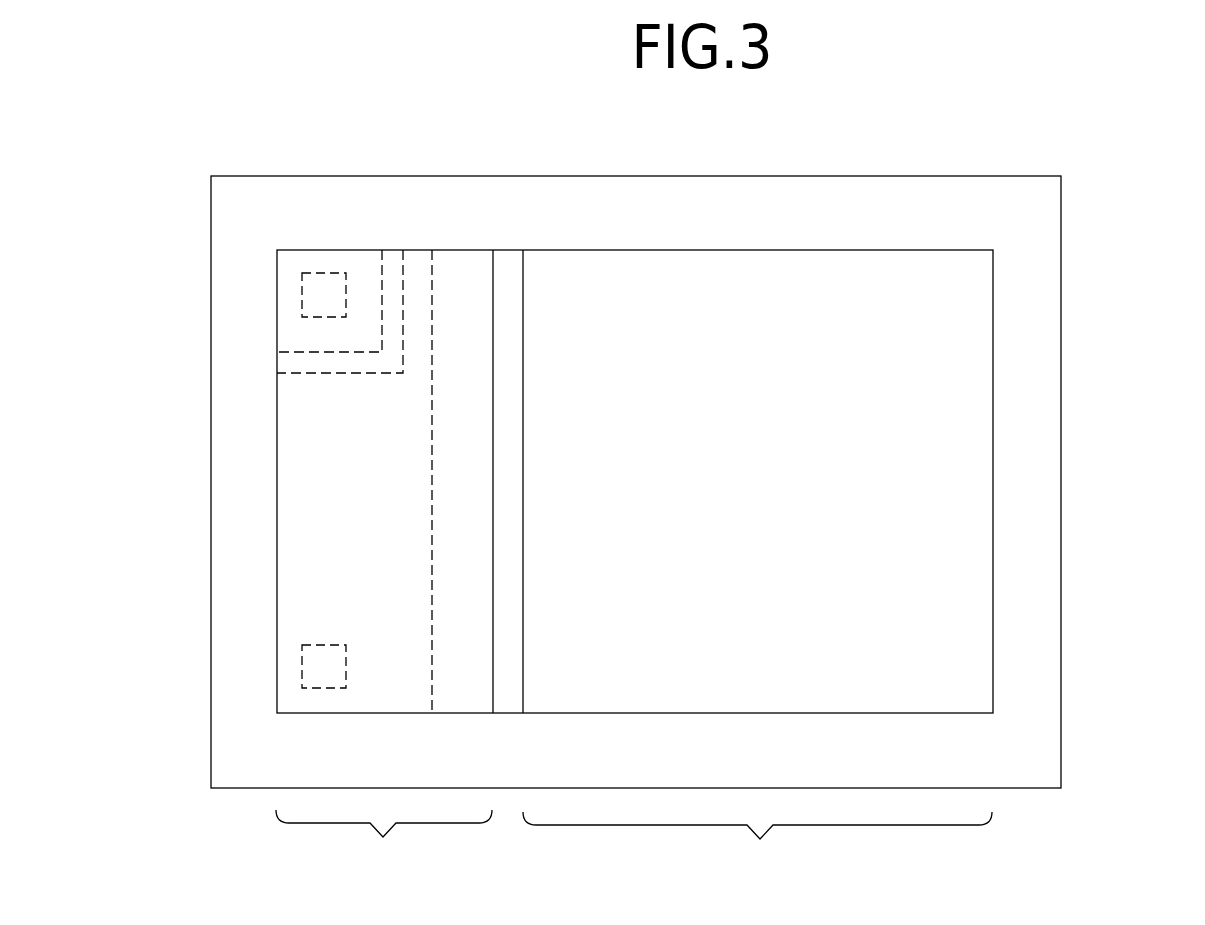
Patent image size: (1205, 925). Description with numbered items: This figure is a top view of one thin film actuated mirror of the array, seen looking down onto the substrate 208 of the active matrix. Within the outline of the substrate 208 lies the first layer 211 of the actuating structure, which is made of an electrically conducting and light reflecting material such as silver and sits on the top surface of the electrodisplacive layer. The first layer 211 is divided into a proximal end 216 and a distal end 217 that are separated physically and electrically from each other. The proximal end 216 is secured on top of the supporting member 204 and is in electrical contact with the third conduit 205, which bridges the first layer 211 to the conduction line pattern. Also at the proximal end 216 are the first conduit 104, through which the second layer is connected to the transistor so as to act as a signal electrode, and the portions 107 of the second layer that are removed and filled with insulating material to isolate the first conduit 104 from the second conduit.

The substrate 208 is at (1047, 277).
The first layer 211 is at (658, 298).
The supporting member 204 is at (323, 592).
The third conduit 205 is at (322, 288).
The portions of the second layer 107 is at (388, 263).
The first conduit 104 is at (315, 658).
The proximal end 216 is at (384, 844).
The distal end 217 is at (757, 845).